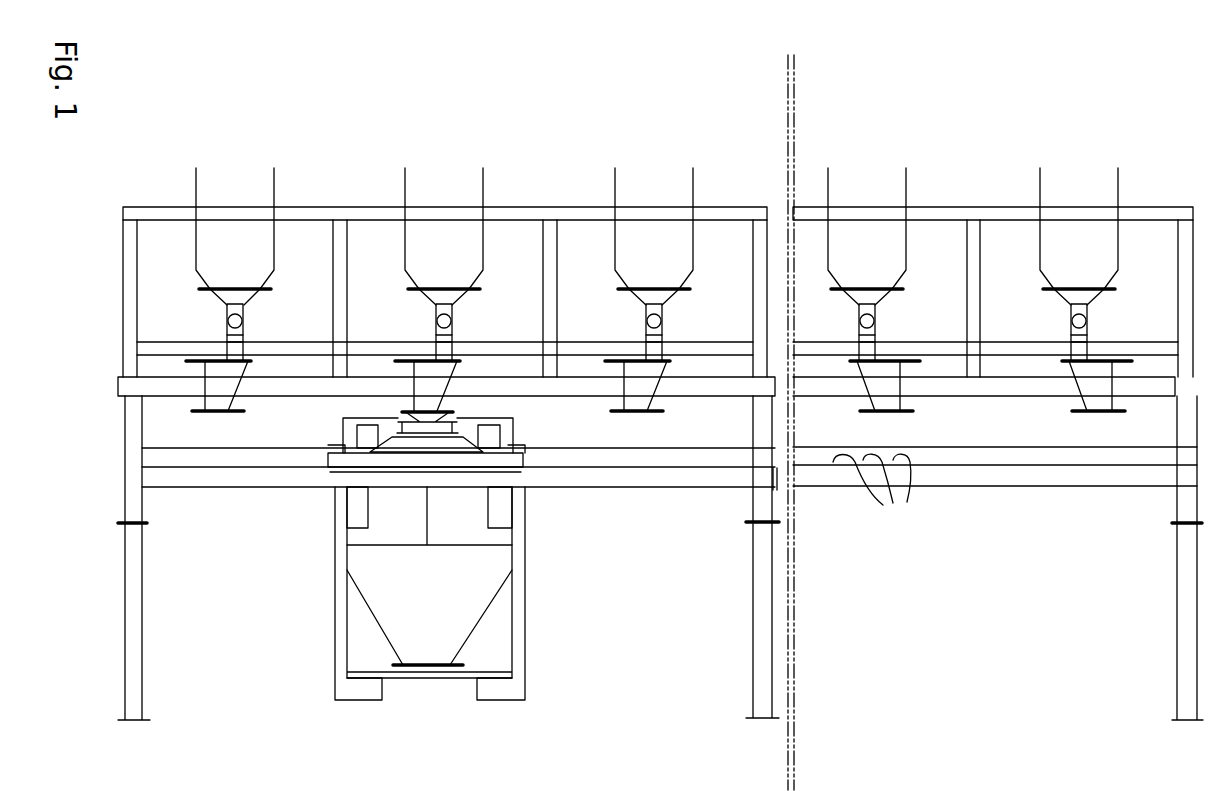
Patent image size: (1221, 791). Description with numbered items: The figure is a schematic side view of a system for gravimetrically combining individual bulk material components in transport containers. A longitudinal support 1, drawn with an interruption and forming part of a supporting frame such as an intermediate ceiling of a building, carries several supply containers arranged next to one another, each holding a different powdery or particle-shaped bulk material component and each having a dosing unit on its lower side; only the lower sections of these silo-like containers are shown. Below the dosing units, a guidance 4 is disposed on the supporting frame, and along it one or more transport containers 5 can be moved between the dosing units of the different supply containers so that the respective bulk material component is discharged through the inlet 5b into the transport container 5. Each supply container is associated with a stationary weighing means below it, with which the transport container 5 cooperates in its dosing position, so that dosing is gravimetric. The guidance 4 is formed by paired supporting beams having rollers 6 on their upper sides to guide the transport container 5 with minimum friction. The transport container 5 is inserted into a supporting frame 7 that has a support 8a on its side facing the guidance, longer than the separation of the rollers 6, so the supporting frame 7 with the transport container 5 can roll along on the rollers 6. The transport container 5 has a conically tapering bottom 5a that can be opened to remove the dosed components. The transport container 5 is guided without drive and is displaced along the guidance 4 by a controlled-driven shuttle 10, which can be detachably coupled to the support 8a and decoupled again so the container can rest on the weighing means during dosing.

The longitudinal support 1 is at (310, 210).
The guidance 4 is at (697, 473).
The transport container 5 is at (493, 567).
The conically tapering bottom 5a is at (433, 666).
The funnel inlet 5b is at (447, 413).
The rollers 6 is at (872, 497).
The supporting frame 7 is at (520, 633).
The support 8a is at (510, 458).
The shuttle 10 is at (347, 432).